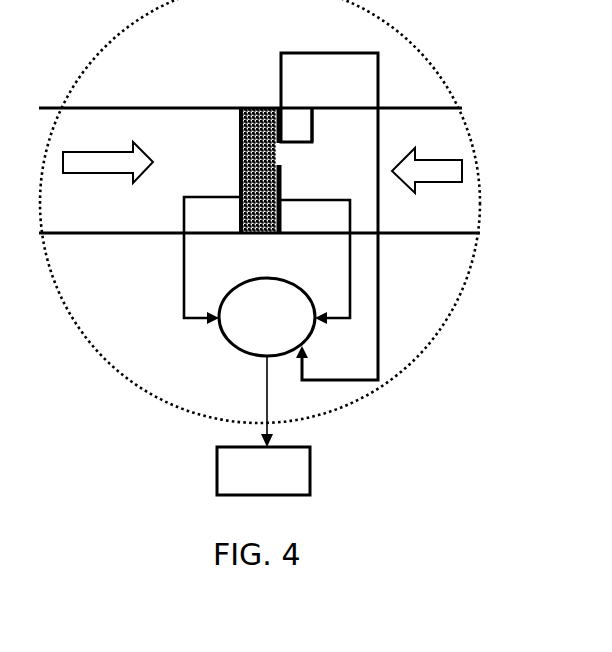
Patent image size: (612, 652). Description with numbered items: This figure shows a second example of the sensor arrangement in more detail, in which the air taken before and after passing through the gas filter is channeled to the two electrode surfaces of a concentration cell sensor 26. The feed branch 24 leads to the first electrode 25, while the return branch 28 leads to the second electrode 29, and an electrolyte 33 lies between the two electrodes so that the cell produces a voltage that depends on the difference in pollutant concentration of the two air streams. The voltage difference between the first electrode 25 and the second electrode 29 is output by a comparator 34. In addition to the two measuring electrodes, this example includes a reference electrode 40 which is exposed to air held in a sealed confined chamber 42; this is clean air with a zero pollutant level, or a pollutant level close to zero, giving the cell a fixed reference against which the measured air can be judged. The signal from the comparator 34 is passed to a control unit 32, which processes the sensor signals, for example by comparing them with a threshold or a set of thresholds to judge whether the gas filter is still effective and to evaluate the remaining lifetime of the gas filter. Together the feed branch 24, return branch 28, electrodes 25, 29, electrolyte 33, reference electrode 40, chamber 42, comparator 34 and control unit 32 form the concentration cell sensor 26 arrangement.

The feed branch 24 is at (172, 107).
The first electrode 25 is at (239, 163).
The concentration cell sensor 26 is at (454, 312).
The return branch 28 is at (416, 109).
The second electrode 29 is at (283, 180).
The control unit 32 is at (311, 470).
The electrolyte 33 is at (258, 116).
The comparator 34 is at (218, 331).
The reference electrode 40 is at (282, 126).
The sealed confined chamber 42 is at (313, 133).